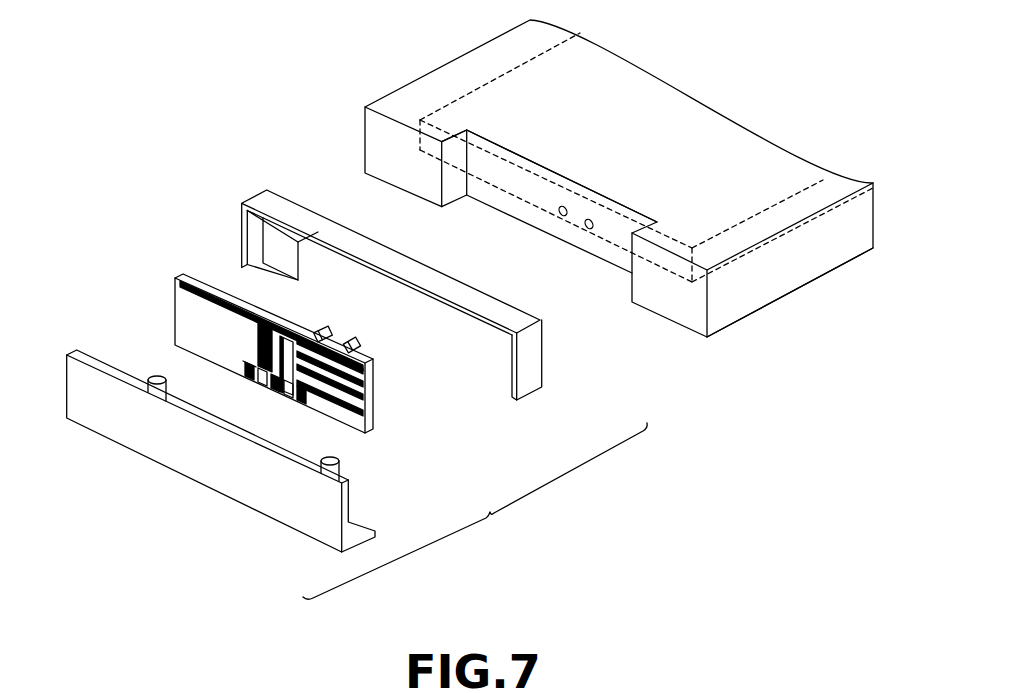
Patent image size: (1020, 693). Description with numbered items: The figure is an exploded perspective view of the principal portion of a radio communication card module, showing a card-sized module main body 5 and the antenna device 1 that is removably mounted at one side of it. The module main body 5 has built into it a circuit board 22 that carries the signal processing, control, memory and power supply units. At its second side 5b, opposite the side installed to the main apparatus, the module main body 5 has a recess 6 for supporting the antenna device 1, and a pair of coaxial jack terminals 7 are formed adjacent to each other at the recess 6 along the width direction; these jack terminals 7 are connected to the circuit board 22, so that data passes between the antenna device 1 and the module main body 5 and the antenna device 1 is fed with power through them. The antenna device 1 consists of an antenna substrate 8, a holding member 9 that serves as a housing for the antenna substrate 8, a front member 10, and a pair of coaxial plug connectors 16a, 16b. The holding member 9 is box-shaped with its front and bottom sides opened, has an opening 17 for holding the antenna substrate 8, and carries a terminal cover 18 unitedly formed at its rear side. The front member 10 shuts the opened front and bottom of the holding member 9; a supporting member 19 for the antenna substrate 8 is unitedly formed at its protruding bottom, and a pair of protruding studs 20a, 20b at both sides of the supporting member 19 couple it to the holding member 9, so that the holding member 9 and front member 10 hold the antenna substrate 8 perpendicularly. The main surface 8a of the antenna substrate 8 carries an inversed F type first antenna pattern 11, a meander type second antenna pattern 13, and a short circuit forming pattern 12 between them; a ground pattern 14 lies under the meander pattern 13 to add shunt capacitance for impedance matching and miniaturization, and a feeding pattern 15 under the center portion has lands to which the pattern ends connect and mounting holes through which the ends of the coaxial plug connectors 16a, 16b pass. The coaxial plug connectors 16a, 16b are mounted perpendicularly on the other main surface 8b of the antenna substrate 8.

The antenna device 1 is at (518, 559).
The module main body 5 is at (619, 199).
The second side 5b is at (757, 316).
The recess 6 is at (483, 207).
The coaxial jack terminals 7 is at (565, 235).
The antenna substrate 8 is at (272, 330).
The main surface 8a is at (187, 322).
The other main surface 8b is at (297, 330).
The holding member 9 is at (392, 250).
The front member 10 is at (251, 441).
The first antenna pattern 11 is at (223, 297).
The short circuit forming pattern 12 is at (278, 387).
The second antenna pattern 13 is at (375, 363).
The ground pattern 14 is at (322, 402).
The feeding pattern 15 is at (240, 370).
The coaxial plug connector 16a is at (313, 327).
The coaxial plug connector 16b is at (343, 337).
The opening 17 is at (447, 313).
The terminal cover 18 is at (336, 212).
The supporting member 19 is at (285, 455).
The protruding stud 20a is at (157, 380).
The protruding stud 20b is at (323, 462).
The circuit board 22 is at (463, 92).